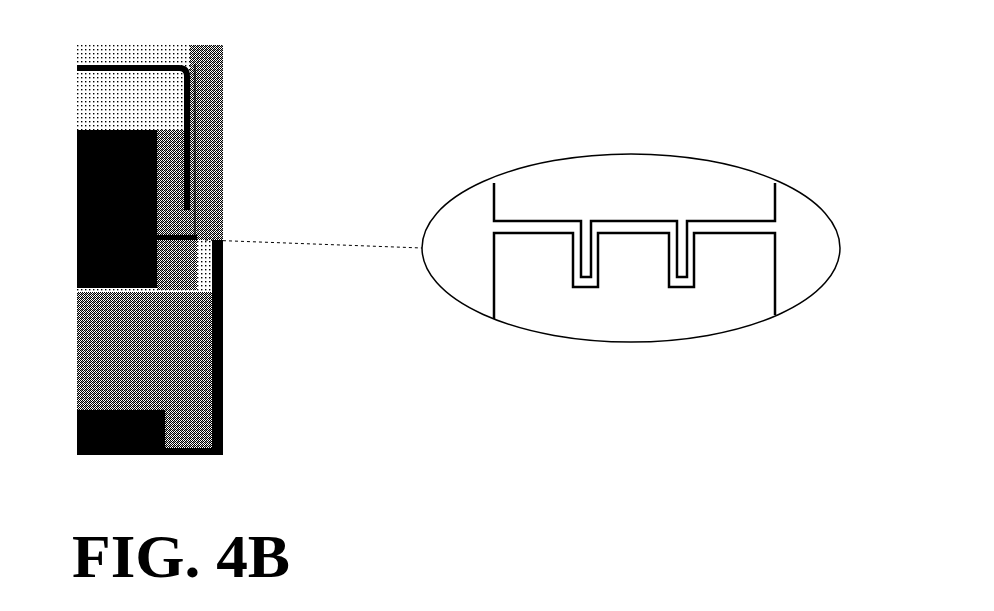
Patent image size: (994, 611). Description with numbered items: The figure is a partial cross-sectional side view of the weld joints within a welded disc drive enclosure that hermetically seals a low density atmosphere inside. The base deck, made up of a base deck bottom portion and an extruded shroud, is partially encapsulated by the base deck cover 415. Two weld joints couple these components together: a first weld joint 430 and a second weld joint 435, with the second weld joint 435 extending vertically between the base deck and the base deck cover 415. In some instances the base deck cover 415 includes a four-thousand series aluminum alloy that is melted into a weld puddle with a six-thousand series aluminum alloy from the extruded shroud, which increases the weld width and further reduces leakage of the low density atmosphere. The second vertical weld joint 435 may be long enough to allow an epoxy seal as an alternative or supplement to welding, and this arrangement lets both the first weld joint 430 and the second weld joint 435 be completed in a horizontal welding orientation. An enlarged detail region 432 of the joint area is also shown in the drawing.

The base deck cover 415 is at (167, 107).
The first weld joint 430 is at (195, 237).
The enlarged detail region 432 is at (683, 157).
The second vertical weld joint 435 is at (193, 161).